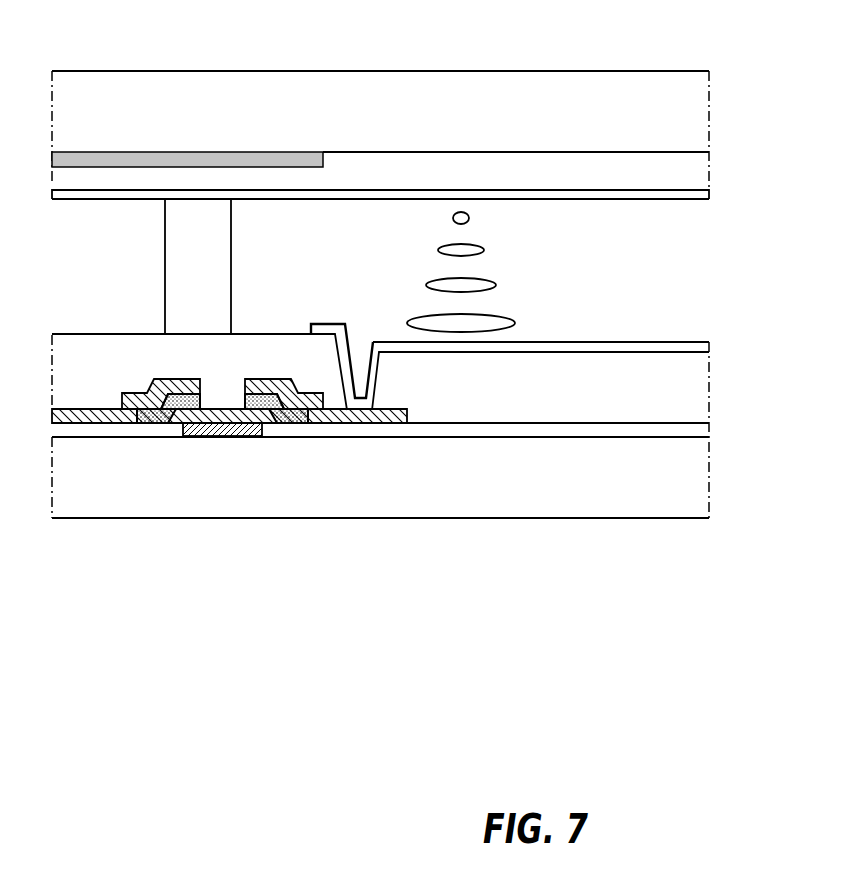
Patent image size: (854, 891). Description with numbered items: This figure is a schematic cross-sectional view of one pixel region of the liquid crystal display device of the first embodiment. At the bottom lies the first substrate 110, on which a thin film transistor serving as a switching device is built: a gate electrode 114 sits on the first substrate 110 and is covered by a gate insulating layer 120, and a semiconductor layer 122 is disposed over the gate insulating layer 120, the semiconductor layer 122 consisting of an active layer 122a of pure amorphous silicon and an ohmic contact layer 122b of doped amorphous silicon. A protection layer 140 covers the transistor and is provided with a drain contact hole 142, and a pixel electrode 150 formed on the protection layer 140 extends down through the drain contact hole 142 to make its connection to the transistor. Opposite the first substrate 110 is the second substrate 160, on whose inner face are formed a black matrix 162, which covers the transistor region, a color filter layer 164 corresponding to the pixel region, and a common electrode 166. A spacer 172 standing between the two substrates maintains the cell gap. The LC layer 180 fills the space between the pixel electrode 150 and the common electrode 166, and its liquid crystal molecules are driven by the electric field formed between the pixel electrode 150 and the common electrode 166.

The first substrate 110 is at (694, 506).
The gate electrode 114 is at (232, 438).
The gate insulating layer 120 is at (330, 432).
The semiconductor layer 122 is at (208, 447).
The active layer 122a is at (160, 424).
The ohmic contact layer 122b is at (137, 424).
The protection layer 140 is at (622, 380).
The drain contact hole 142 is at (361, 358).
The pixel electrode 150 is at (574, 342).
The second substrate 160 is at (693, 120).
The black matrix 162 is at (180, 160).
The color filter layer 164 is at (351, 166).
The common electrode 166 is at (428, 197).
The spacer 172 is at (178, 270).
The LC layer 180 is at (695, 246).